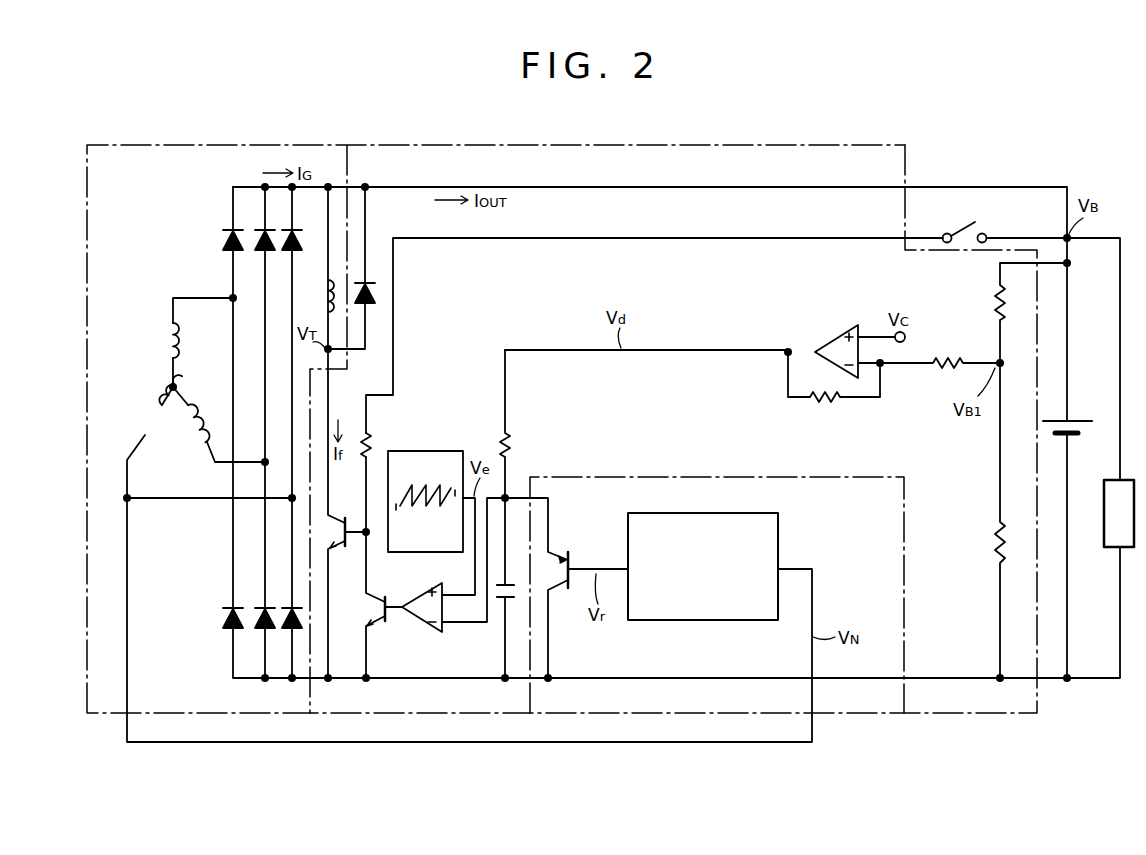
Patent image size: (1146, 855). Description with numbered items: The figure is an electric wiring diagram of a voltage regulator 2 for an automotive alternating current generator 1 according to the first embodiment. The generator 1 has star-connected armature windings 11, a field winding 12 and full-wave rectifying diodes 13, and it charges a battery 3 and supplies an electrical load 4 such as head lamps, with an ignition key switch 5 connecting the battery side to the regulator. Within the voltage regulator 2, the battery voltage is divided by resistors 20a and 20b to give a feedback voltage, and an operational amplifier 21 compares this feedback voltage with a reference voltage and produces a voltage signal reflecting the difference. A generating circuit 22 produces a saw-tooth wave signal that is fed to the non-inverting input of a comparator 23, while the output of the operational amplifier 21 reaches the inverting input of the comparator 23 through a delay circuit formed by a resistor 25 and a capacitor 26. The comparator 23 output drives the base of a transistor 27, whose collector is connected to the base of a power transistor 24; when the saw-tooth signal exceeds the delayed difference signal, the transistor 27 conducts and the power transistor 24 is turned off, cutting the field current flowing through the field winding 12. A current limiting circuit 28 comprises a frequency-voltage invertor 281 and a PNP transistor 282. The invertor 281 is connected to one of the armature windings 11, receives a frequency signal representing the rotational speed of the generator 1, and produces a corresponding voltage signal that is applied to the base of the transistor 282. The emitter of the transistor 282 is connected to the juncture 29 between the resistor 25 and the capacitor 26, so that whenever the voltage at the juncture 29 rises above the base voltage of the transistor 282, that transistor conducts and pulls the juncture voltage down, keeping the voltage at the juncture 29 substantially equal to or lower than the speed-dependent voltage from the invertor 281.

The alternating current generator 1 is at (185, 145).
The voltage regulator 2 is at (603, 145).
The battery 3 is at (1075, 418).
The electrical load 4 is at (1106, 547).
The ignition key switch 5 is at (973, 230).
The armature windings 11 is at (165, 345).
The field winding 12 is at (322, 294).
The full-wave rectifying diodes 13 is at (222, 240).
The resistor 20a is at (992, 303).
The resistor 20b is at (992, 554).
The operational amplifier 21 is at (829, 330).
The saw-tooth wave generating circuit 22 is at (406, 451).
The comparator 23 is at (415, 628).
The power transistor 24 is at (339, 548).
The resistor 25 is at (498, 440).
The capacitor 26 is at (497, 613).
The transistor 27 is at (384, 600).
The current limiting circuit 28 is at (655, 477).
The juncture 29 is at (510, 494).
The frequency-voltage invertor 281 is at (780, 525).
The PNP transistor 282 is at (556, 549).